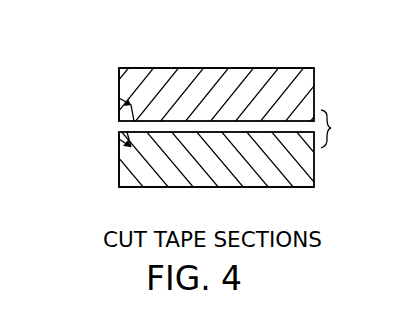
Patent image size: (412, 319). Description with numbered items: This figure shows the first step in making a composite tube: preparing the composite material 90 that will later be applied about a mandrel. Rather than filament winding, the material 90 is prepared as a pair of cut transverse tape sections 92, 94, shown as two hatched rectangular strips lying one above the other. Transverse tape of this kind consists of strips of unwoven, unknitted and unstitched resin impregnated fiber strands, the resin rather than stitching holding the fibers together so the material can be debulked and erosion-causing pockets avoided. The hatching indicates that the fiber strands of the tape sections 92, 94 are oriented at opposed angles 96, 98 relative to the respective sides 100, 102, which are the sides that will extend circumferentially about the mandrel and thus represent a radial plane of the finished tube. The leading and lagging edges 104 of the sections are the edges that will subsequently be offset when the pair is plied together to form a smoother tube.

The composite material 90 is at (318, 60).
The transverse tape section 92 is at (314, 99).
The transverse tape section 94 is at (314, 157).
The angle 96 is at (111, 91).
The angle 98 is at (118, 158).
The side 100 is at (119, 82).
The side 102 is at (119, 139).
The leading and lagging edges 104 is at (200, 68).